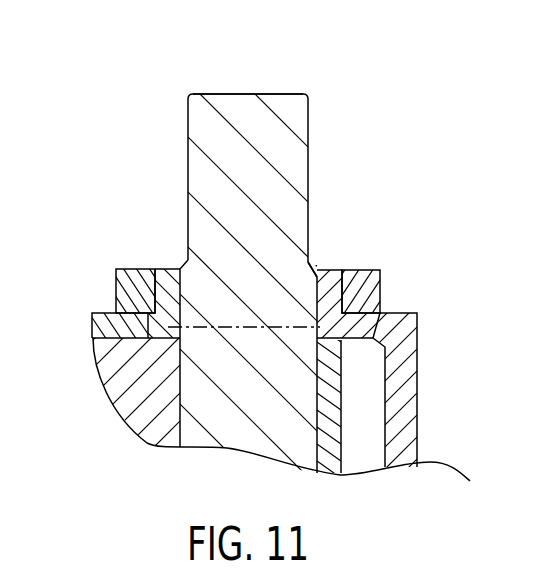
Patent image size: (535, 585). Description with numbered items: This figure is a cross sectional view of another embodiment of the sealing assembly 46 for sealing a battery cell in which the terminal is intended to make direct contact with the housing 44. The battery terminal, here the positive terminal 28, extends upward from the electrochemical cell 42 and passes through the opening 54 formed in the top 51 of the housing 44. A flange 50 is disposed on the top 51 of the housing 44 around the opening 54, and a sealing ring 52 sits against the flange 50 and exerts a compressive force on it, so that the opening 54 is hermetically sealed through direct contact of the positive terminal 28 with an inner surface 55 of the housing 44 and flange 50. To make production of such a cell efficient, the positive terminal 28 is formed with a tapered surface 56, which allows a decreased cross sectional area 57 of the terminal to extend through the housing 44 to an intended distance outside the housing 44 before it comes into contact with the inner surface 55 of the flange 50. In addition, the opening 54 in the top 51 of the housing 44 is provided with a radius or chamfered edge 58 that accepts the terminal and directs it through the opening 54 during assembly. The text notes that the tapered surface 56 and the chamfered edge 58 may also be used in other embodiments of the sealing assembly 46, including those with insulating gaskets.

The positive terminal 28 is at (290, 147).
The electrochemical cell 42 is at (112, 392).
The housing 44 is at (400, 385).
The sealing assembly 46 is at (323, 250).
The flange 50 is at (328, 285).
The top 51 is at (103, 325).
The sealing ring 52 is at (367, 302).
The opening 54 is at (240, 327).
The inner surface 55 is at (182, 287).
The tapered surface 56 is at (185, 265).
The decreased cross sectional area 57 is at (248, 93).
The chamfered edge 58 is at (160, 338).